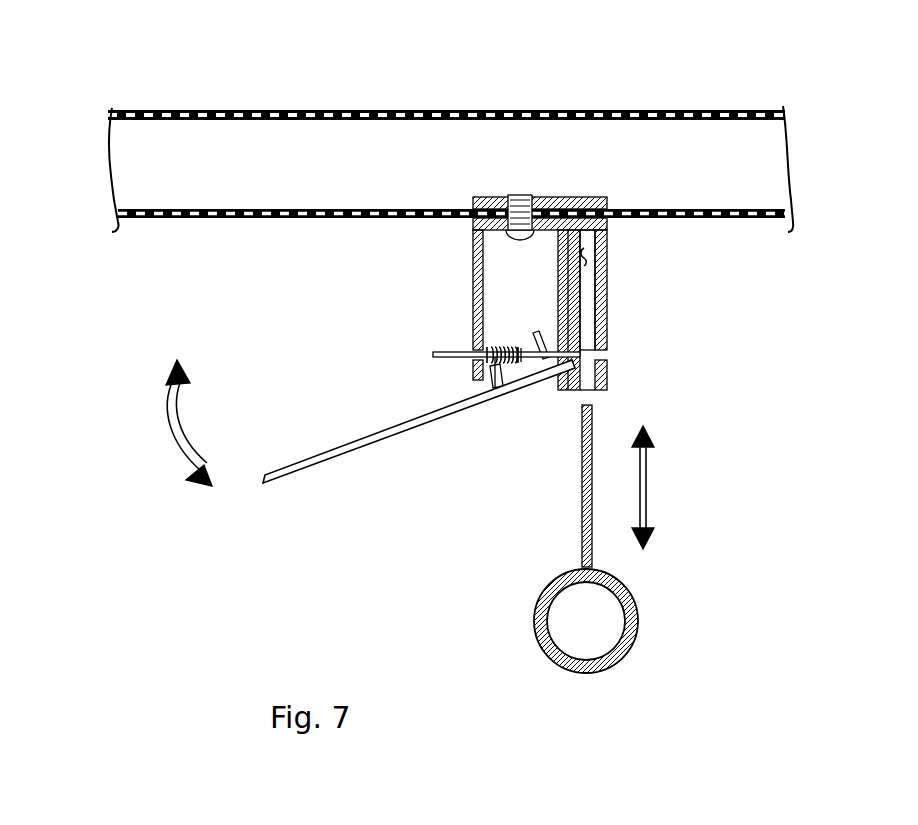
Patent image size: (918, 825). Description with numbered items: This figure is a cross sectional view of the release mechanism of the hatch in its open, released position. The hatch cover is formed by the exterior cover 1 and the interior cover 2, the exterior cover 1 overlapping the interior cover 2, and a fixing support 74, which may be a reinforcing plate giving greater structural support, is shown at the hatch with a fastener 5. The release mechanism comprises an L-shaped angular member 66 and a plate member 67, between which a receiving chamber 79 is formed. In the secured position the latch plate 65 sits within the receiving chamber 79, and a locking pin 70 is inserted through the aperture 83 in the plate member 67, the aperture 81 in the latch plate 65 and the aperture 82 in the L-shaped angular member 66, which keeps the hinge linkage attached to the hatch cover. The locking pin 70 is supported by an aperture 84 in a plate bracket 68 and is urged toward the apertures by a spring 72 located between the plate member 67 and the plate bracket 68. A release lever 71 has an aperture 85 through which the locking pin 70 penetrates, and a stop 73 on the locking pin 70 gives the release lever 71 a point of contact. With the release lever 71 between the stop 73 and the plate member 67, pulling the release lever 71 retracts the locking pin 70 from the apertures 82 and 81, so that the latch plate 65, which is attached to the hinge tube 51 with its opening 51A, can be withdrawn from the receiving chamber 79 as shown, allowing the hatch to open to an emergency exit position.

The exterior cover 1 is at (650, 105).
The interior cover 2 is at (690, 219).
The screw 5 is at (519, 200).
The ring 51 is at (637, 615).
The ring opening 51A is at (600, 628).
The latch plate 65 is at (592, 460).
The L-shaped angular member 66 is at (608, 292).
The plate member 67 is at (608, 317).
The plate bracket 68 is at (476, 300).
The locking pin 70 is at (433, 353).
The release lever 71 is at (394, 437).
The spring 72 is at (498, 366).
The stop 73 is at (521, 362).
The fixing support 74 is at (584, 242).
The receiving chamber 79 is at (607, 262).
The aperture 81 is at (583, 505).
The aperture 82 is at (608, 355).
The aperture 83 is at (607, 382).
The aperture 84 is at (472, 350).
The aperture 85 is at (547, 335).